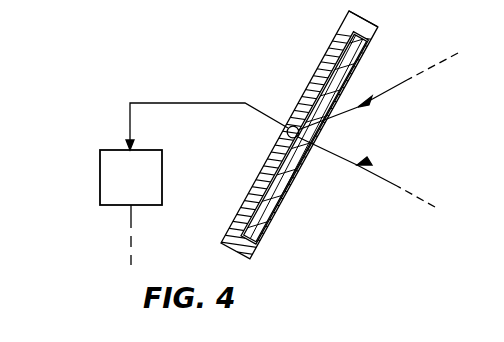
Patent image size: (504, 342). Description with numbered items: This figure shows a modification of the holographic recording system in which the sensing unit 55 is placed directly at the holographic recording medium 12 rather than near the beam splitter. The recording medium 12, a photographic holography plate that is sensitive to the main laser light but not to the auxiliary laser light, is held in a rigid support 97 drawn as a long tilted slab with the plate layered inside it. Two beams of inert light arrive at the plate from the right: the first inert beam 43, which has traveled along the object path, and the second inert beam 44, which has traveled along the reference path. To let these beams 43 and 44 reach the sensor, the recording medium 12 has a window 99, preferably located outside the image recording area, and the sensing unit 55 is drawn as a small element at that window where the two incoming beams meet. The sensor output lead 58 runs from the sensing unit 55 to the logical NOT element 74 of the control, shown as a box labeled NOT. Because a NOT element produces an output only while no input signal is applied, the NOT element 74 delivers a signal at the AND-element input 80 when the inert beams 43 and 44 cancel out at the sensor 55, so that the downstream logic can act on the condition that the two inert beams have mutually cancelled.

The holographic recording medium 12 is at (277, 210).
The window 99 is at (303, 152).
The rigid support 97 is at (345, 19).
The sensing unit 55 is at (287, 131).
The second beam of inert light 44 is at (380, 100).
The first beam of inert light 43 is at (362, 168).
The sensor output lead 58 is at (226, 102).
The logical NOT element 74 is at (100, 162).
The AND-element input 80 is at (130, 223).